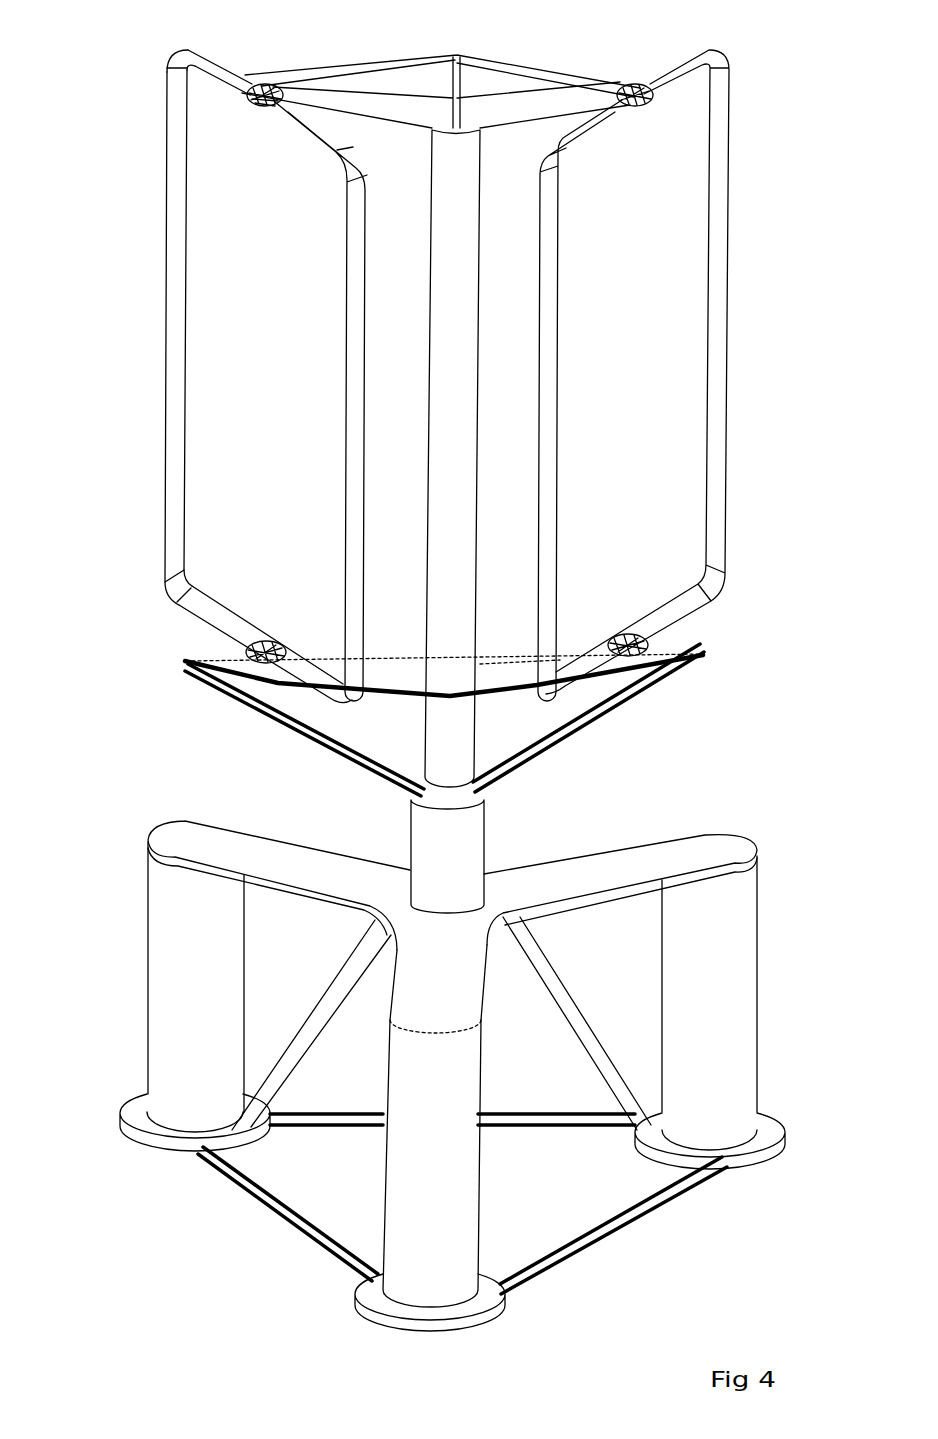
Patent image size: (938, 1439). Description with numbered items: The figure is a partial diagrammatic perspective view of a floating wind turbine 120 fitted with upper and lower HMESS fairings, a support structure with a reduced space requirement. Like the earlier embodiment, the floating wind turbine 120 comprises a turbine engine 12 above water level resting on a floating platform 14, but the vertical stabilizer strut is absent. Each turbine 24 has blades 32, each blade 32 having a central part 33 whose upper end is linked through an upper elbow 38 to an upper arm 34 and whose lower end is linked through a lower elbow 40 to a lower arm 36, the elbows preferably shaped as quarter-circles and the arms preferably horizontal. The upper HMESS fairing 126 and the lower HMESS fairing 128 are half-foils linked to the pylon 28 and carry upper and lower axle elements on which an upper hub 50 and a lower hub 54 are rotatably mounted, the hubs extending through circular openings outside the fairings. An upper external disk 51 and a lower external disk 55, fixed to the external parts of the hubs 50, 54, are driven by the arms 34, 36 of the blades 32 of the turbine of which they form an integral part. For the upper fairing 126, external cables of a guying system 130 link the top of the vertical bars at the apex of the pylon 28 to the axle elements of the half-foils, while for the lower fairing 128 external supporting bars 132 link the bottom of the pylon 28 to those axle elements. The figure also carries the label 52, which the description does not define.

The floating wind turbine 120 is at (797, 78).
The turbine engine 12 is at (66, 764).
The floating platform 14 is at (62, 818).
The turbine 24 is at (154, 146).
The pylon 28 is at (452, 293).
The blade 32 is at (158, 390).
The central part 33 is at (173, 343).
The upper arm 34 is at (221, 72).
The lower arm 36 is at (203, 620).
The upper elbow 38 is at (180, 58).
The lower elbow 40 is at (167, 593).
The upper hub 50 is at (268, 87).
The upper external disk 51 is at (263, 108).
The upper hub connector 52 is at (640, 86).
The lower hub 54 is at (247, 687).
The lower external disk 55 is at (273, 643).
The upper HMESS fairing 126 is at (342, 97).
The lower HMESS fairing 128 is at (387, 675).
The guying system 130 is at (407, 63).
The external supporting bars 132 is at (362, 767).